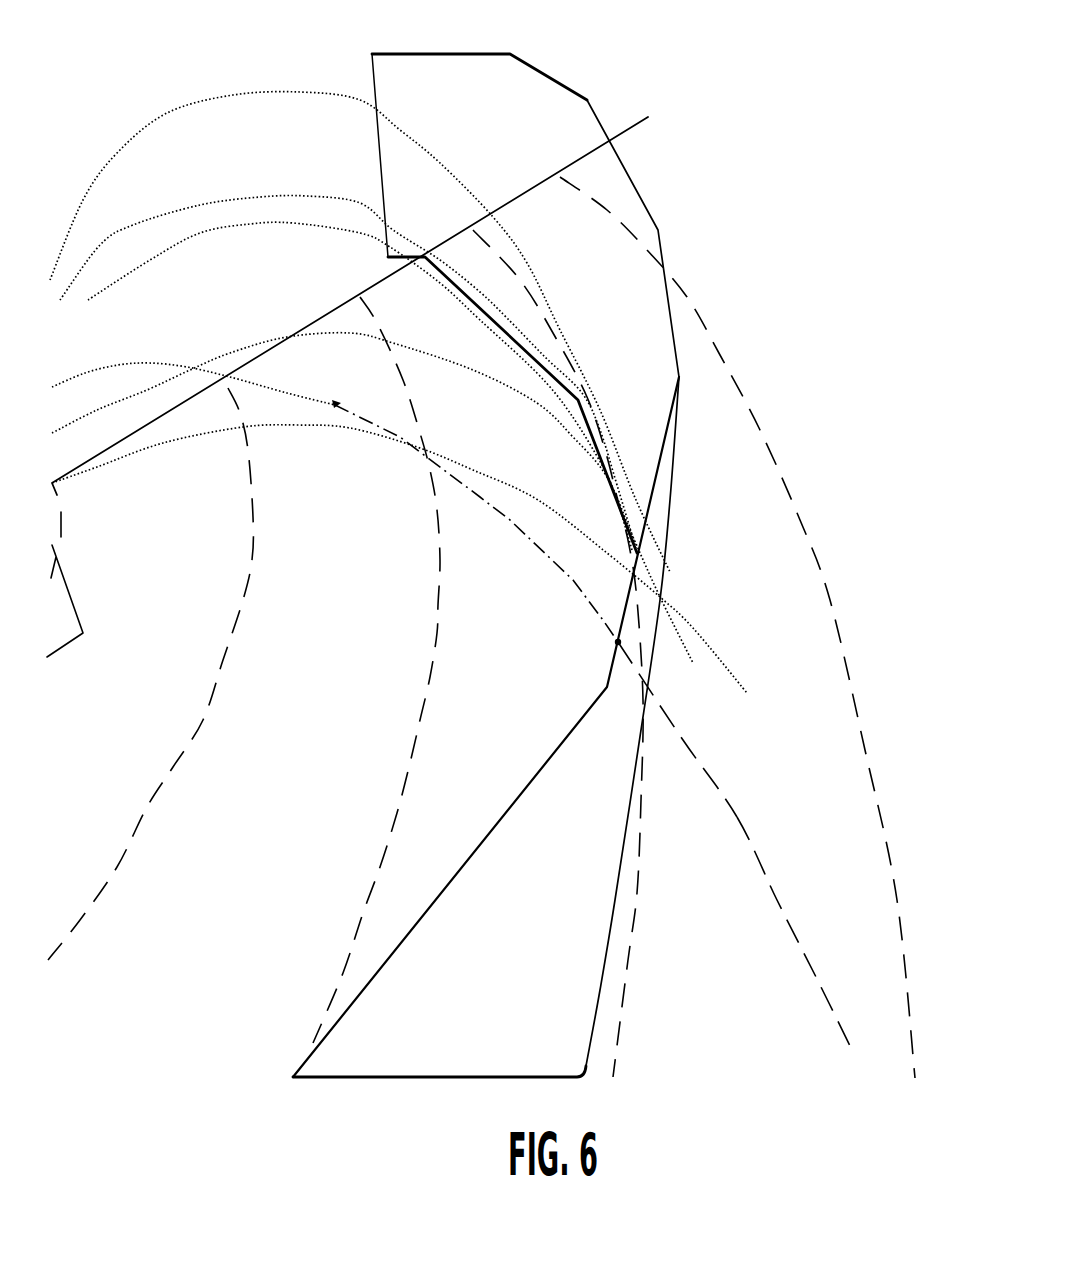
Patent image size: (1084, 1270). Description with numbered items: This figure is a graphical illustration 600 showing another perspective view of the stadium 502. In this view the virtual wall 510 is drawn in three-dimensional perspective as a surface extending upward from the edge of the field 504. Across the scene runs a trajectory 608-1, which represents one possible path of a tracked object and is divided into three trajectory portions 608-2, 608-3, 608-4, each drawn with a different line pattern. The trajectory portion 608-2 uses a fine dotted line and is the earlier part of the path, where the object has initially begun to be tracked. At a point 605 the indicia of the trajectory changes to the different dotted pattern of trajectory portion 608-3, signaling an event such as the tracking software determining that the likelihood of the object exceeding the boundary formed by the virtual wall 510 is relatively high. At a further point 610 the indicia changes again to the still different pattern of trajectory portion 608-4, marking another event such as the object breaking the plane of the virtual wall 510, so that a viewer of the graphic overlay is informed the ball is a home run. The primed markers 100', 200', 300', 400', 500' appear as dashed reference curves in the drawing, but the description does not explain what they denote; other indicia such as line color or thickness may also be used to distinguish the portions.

The graphical illustration 600 is at (91, 52).
The stadium 502 is at (257, 73).
The field 504 is at (284, 861).
The virtual wall 510 is at (550, 797).
The point 605 is at (337, 405).
The trajectory 608-1 is at (684, 738).
The trajectory portion 608-2 is at (117, 367).
The trajectory portion 608-3 is at (509, 520).
The trajectory portion 608-4 is at (768, 878).
The point 610 is at (617, 644).
The first reference station 100' is at (71, 584).
The second reference station 200' is at (150, 674).
The third reference station 300' is at (376, 670).
The fourth reference station 400' is at (566, 653).
The fifth reference station 500' is at (760, 627).